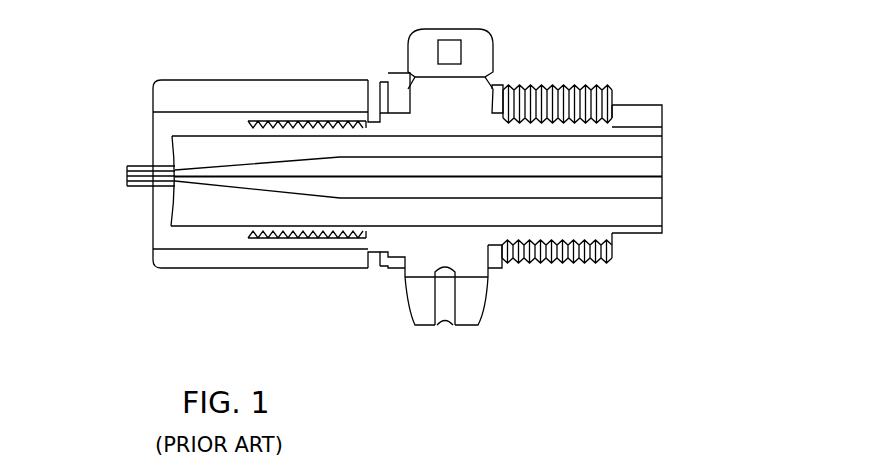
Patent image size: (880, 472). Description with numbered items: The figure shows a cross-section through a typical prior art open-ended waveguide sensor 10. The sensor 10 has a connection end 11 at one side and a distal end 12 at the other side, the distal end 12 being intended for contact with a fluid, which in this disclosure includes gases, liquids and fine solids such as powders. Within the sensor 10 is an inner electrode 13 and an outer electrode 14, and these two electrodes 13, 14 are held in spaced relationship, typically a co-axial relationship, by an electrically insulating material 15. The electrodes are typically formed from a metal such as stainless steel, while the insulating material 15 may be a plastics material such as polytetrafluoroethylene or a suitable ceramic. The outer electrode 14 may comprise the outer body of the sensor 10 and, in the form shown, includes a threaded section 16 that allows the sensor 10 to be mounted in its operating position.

The open-ended waveguide sensor 10 is at (163, 283).
The connection end 11 is at (150, 132).
The distal end 12 is at (662, 178).
The inner electrode 13 is at (578, 187).
The outer electrode 14 is at (277, 270).
The electrically insulating material 15 is at (497, 204).
The threaded section 16 is at (553, 88).